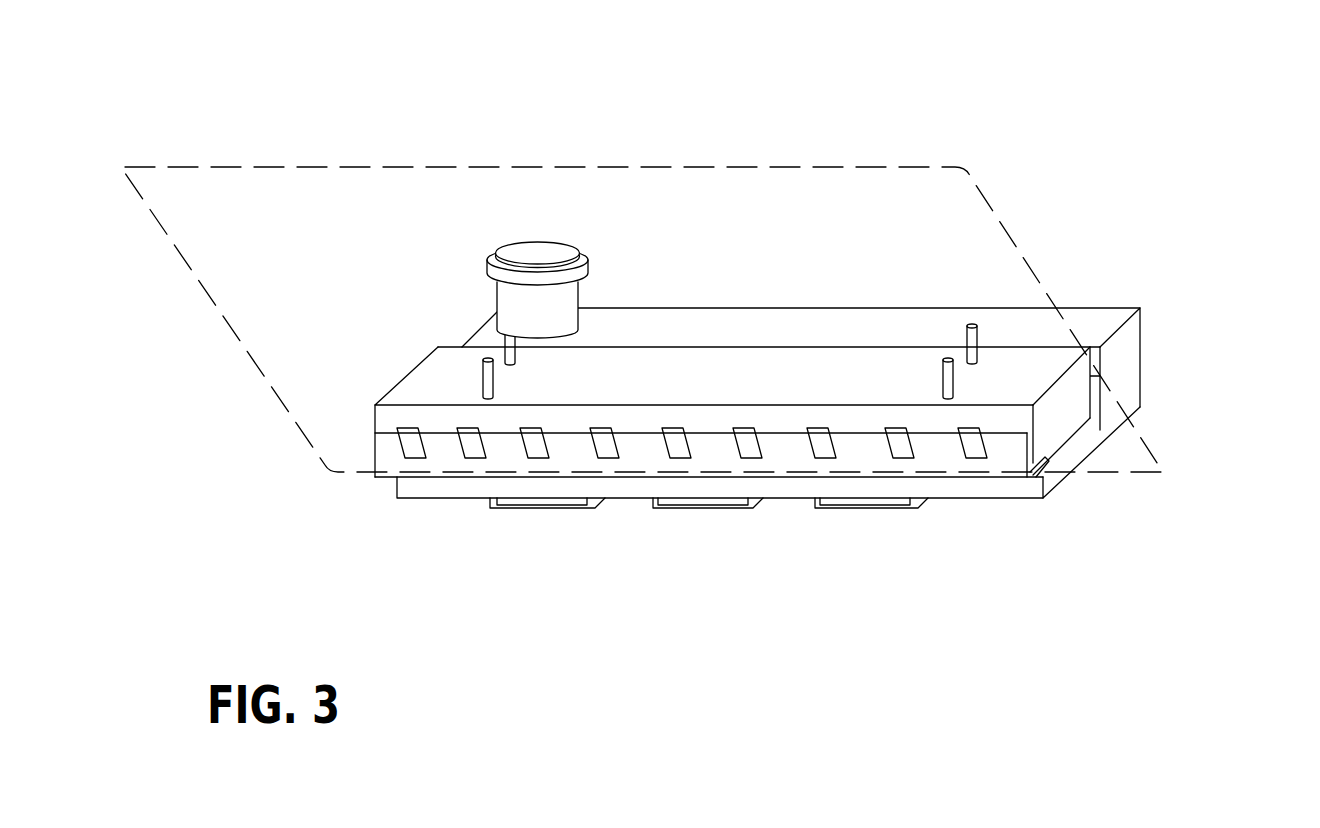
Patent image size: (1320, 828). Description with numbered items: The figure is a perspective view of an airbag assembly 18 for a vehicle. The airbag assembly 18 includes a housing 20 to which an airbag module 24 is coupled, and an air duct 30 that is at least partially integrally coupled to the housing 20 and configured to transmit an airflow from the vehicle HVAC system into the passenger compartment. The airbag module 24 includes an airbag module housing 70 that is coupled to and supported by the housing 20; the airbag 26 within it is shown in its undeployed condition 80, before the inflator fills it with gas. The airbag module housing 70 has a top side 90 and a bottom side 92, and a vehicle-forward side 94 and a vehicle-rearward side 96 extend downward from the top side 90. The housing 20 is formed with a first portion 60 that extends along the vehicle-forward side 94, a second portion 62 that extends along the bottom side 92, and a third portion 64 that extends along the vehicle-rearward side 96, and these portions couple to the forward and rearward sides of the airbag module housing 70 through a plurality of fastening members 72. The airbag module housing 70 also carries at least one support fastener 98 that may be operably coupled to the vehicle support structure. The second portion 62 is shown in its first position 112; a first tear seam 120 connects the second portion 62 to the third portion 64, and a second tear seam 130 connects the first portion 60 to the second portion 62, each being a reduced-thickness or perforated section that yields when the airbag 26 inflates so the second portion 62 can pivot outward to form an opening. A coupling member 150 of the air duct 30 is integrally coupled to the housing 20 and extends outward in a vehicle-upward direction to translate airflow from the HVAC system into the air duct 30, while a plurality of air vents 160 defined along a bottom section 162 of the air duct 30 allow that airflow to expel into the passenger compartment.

The airbag assembly 18 is at (909, 150).
The housing 20 is at (772, 307).
The airbag module 24 is at (381, 366).
The airbag 26 is at (658, 358).
The air duct 30 is at (943, 307).
The first portion 60 is at (1073, 307).
The second portion 62 is at (1140, 383).
The third portion 64 is at (373, 452).
The airbag module housing 70 is at (722, 347).
The fastening member 72 is at (533, 445).
The undeployed condition 80 is at (772, 487).
The top side 90 is at (830, 347).
The bottom side 92 is at (1063, 443).
The vehicle-forward side 94 is at (622, 343).
The vehicle-rearward side 96 is at (853, 423).
The support fastener 98 is at (948, 400).
The first position 112 is at (397, 485).
The first tear seam 120 is at (618, 478).
The second tear seam 130 is at (1133, 417).
The coupling member 150 is at (497, 292).
The air vent 160 is at (538, 507).
The bottom section 162 is at (1005, 500).